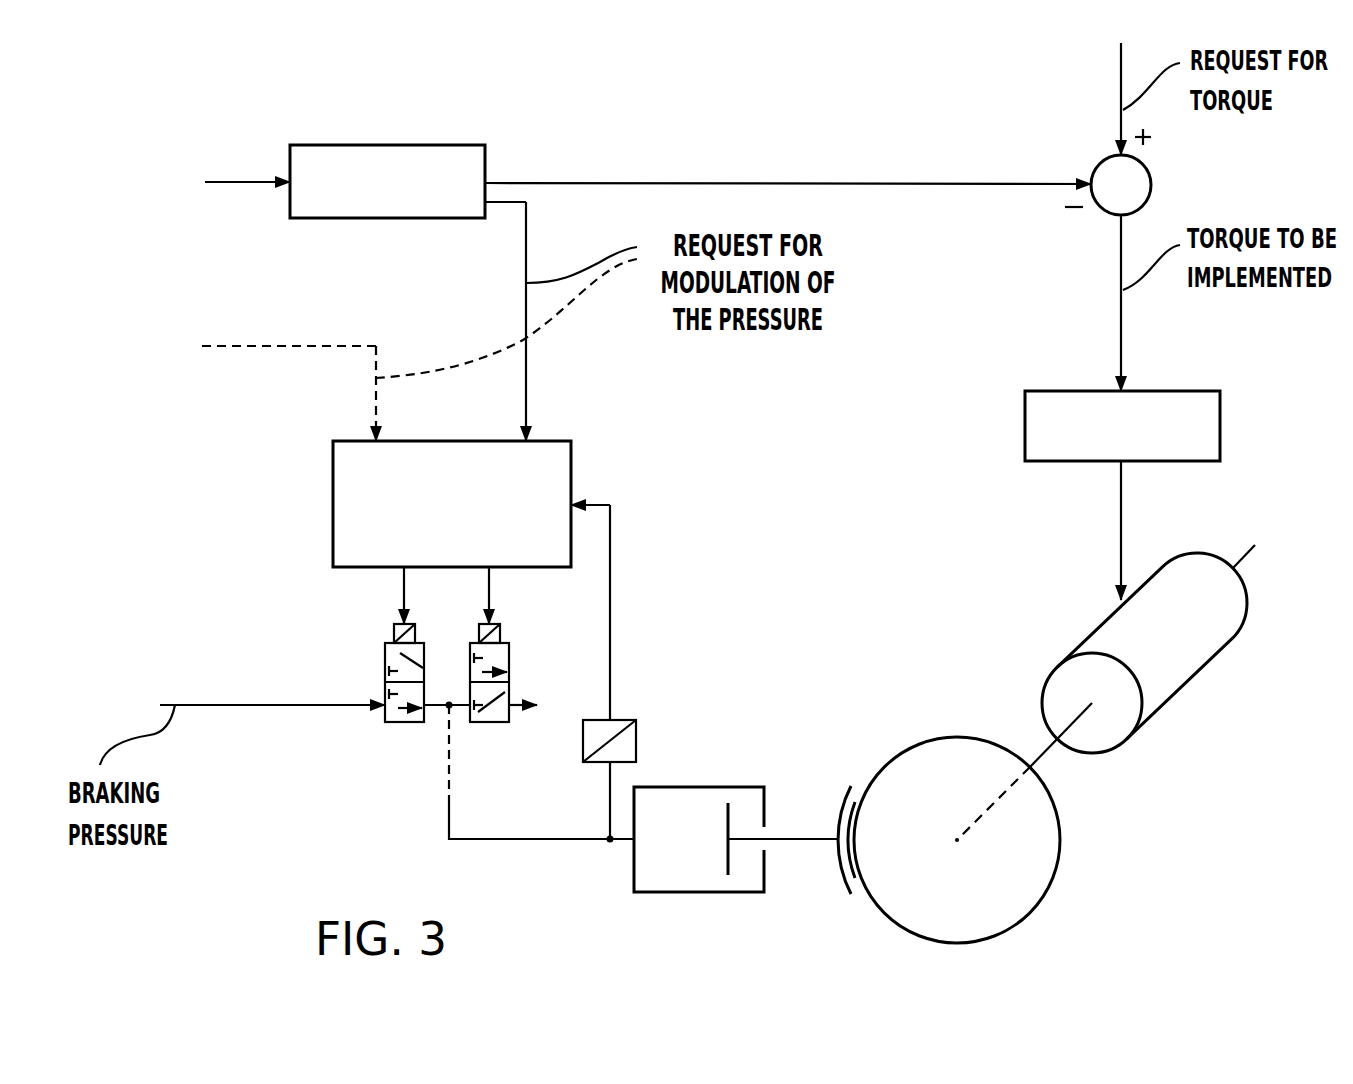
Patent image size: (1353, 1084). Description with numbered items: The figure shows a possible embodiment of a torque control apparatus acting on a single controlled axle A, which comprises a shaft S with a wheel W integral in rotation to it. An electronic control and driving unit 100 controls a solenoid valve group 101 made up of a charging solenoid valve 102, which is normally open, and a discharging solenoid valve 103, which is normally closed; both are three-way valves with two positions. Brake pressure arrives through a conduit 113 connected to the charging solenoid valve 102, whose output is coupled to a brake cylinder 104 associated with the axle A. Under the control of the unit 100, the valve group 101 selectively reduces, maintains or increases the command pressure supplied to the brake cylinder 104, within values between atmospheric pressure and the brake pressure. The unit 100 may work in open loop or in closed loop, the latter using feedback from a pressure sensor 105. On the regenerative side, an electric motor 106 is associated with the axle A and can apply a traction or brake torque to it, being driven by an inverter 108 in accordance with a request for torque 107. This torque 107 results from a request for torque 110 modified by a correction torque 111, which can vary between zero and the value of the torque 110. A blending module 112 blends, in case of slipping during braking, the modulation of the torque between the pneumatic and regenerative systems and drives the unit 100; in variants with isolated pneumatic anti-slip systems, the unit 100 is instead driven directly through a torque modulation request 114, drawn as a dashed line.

The electronic control and driving unit 100 is at (548, 442).
The solenoid valve group 101 is at (412, 627).
The charging solenoid valve 102 is at (385, 667).
The discharging solenoid valve 103 is at (509, 666).
The brake cylinder 104 is at (650, 893).
The pressure sensor 105 is at (637, 748).
The electric motor 106 is at (1158, 692).
The request for torque 107 is at (1121, 313).
The inverter 108 is at (1025, 428).
The request for torque 110 is at (1118, 70).
The correction torque 111 is at (732, 183).
The blending module 112 is at (387, 145).
The conduit 113 is at (222, 703).
The torque modulation request 114 is at (291, 345).
The axle A is at (976, 730).
The wheel W is at (920, 797).
The shaft S is at (958, 843).